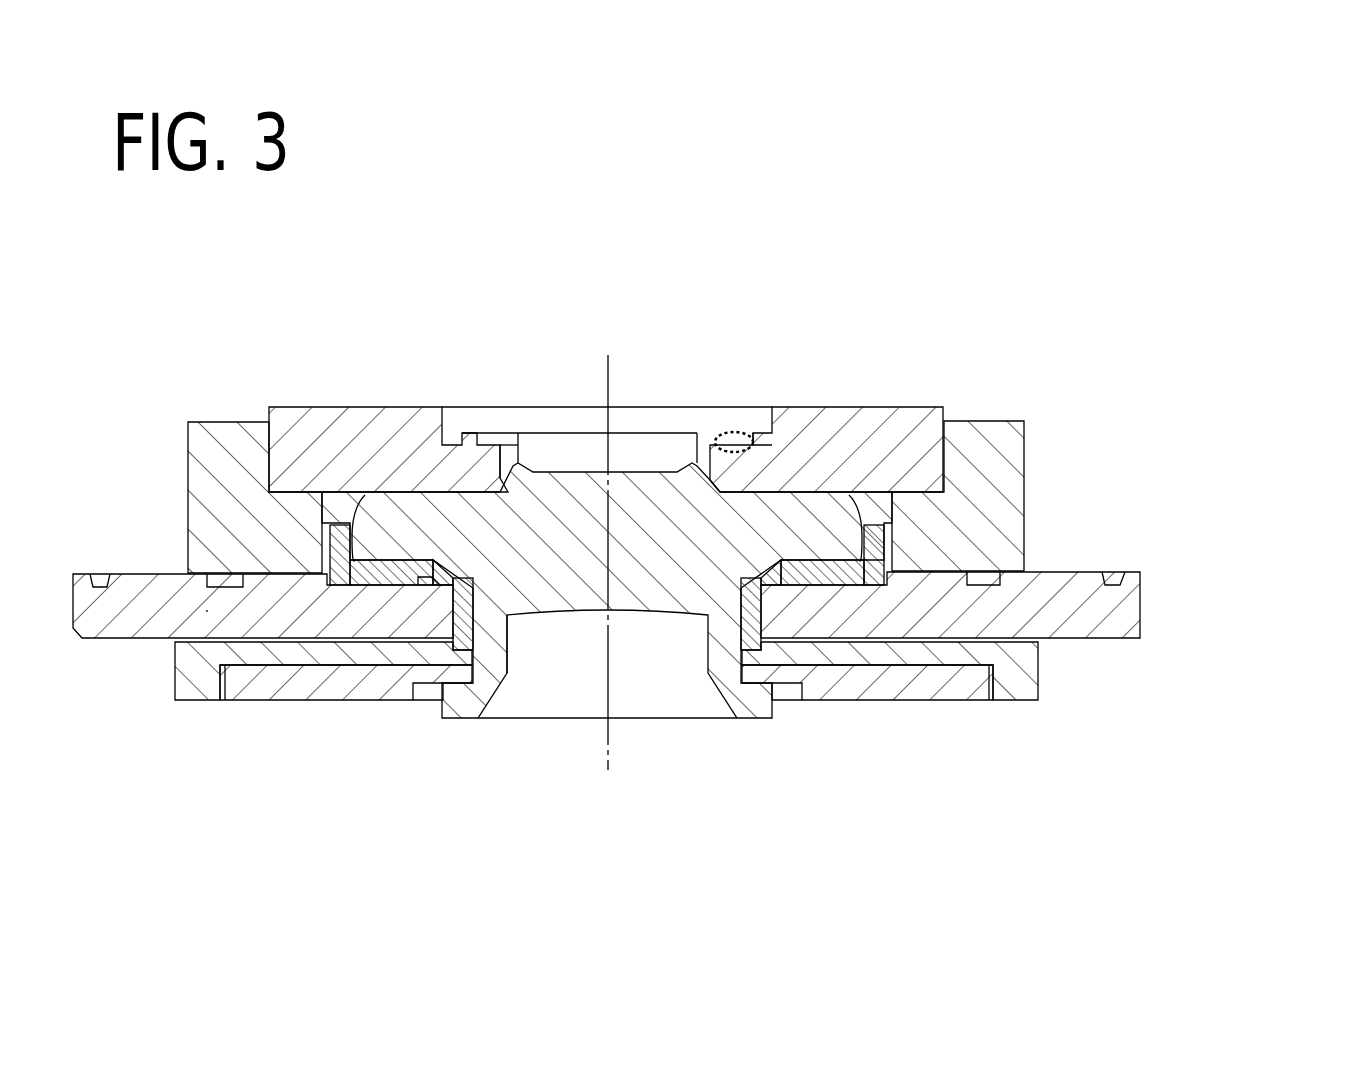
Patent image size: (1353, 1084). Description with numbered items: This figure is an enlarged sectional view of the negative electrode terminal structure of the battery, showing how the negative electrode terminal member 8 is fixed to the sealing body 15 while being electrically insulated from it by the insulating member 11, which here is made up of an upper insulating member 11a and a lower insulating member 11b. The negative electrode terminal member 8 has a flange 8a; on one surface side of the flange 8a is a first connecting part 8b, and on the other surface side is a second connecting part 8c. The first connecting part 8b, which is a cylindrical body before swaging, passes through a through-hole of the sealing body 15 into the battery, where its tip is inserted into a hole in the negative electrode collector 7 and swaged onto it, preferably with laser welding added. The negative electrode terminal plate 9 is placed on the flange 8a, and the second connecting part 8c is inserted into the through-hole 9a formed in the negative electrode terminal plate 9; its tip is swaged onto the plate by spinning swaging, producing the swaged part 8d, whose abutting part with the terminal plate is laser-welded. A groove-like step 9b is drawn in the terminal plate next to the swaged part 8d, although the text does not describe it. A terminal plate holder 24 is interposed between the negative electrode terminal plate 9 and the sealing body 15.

The negative electrode collector 7 is at (606, 757).
The negative electrode terminal member 8 is at (526, 540).
The flange 8a is at (511, 422).
The first connecting part 8b is at (617, 744).
The second connecting part 8c is at (528, 326).
The swaged part 8d is at (703, 354).
The negative electrode terminal plate 9 is at (606, 349).
The through-hole 9a is at (440, 342).
The groove 9b is at (752, 351).
The insulating member 11 is at (700, 591).
The upper insulating member 11a is at (761, 579).
The lower insulating member 11b is at (653, 623).
The sealing body 15 is at (252, 741).
The terminal plate holder 24 is at (964, 439).